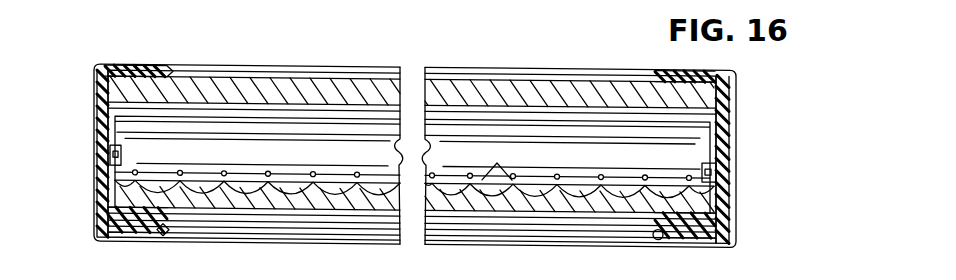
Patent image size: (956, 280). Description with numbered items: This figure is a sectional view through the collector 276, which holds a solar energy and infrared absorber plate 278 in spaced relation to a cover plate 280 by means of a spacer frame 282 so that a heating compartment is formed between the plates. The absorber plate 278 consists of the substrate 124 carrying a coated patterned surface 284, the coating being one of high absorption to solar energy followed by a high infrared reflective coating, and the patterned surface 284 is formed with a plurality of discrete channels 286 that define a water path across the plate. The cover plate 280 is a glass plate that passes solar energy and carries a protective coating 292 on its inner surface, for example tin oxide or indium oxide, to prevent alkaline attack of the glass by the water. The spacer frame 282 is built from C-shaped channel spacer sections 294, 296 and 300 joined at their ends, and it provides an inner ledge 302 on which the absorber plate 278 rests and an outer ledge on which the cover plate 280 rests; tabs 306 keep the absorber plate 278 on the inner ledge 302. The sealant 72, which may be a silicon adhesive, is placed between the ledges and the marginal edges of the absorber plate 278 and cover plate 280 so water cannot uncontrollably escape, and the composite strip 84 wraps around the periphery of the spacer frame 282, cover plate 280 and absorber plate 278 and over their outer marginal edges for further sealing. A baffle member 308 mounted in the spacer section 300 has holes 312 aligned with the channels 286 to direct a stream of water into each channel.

The collector 276 is at (778, 92).
The composite strip 84 is at (388, 67).
The sealant 72 is at (690, 110).
The cover plate 280 is at (500, 69).
The protective coating 292 is at (500, 110).
The spacer section 300 is at (218, 128).
The baffle member 308 is at (348, 133).
The spacer frame 282 is at (157, 119).
The channels 286 is at (323, 175).
The holes 312 is at (505, 160).
The coated patterned surface 284 is at (548, 183).
The substrate 124 is at (308, 200).
The inner ledge 302 is at (178, 207).
The solar energy and infrared absorber plate 278 is at (320, 212).
The tabs 306 is at (118, 162).
The spacer section 294 is at (105, 141).
The spacer section 296 is at (734, 134).